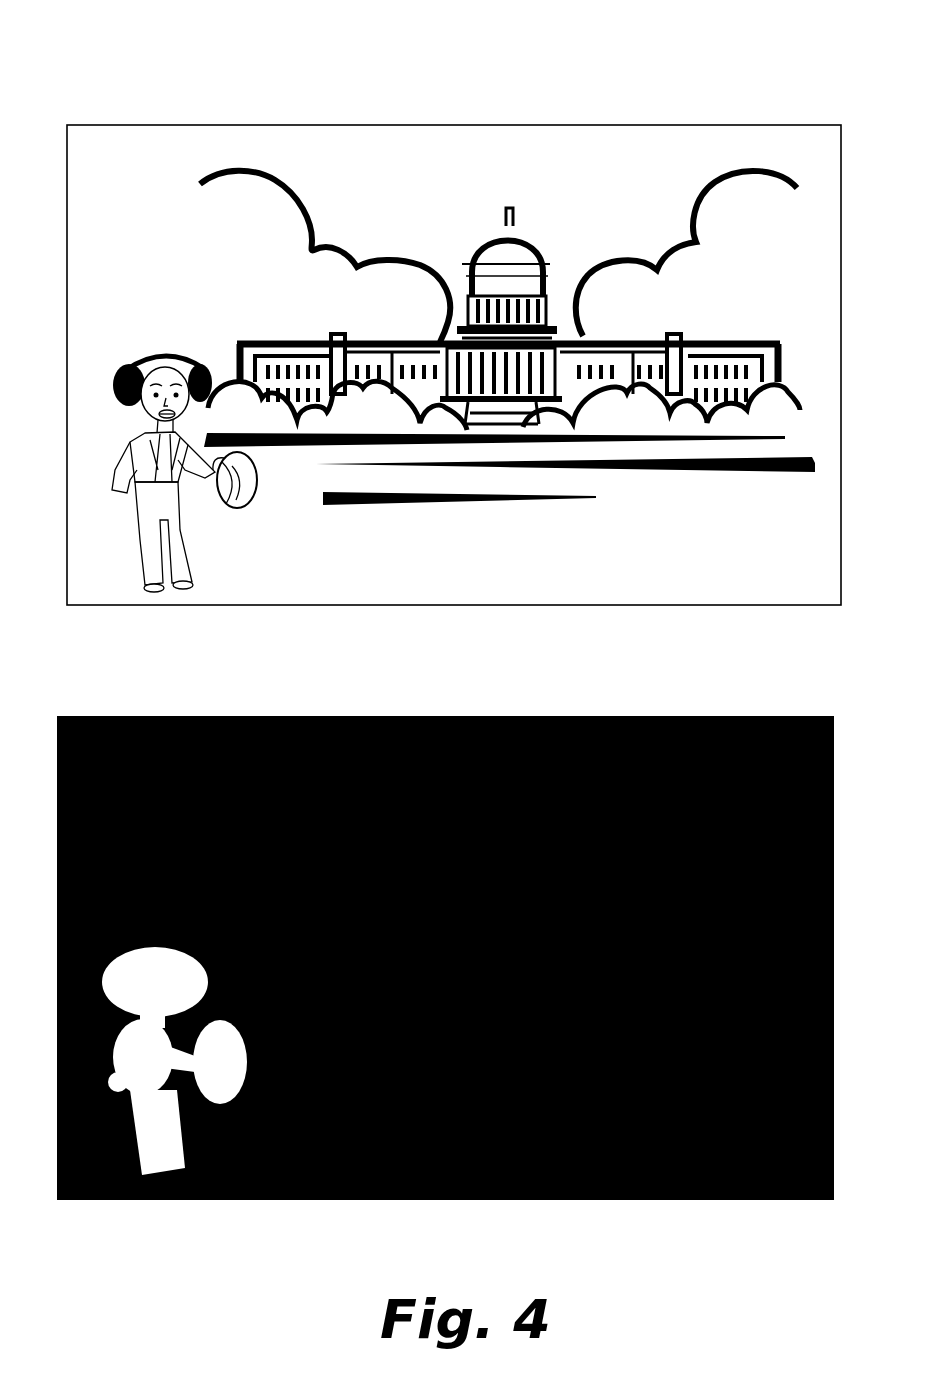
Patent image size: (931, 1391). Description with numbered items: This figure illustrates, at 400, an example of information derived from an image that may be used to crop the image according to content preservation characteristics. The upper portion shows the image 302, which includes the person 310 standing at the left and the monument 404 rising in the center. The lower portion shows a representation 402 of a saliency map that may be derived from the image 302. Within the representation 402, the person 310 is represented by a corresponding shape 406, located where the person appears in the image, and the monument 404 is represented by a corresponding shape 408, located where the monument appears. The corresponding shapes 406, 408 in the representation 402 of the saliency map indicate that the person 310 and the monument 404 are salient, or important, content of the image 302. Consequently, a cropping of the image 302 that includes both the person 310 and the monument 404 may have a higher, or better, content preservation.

The example of information derived from an image 400 is at (141, 68).
The image 302 is at (137, 167).
The person 310 is at (130, 352).
The monument 404 is at (494, 218).
The representation of a saliency map 402 is at (202, 712).
The corresponding shape 406 is at (146, 1105).
The corresponding shape 408 is at (508, 940).